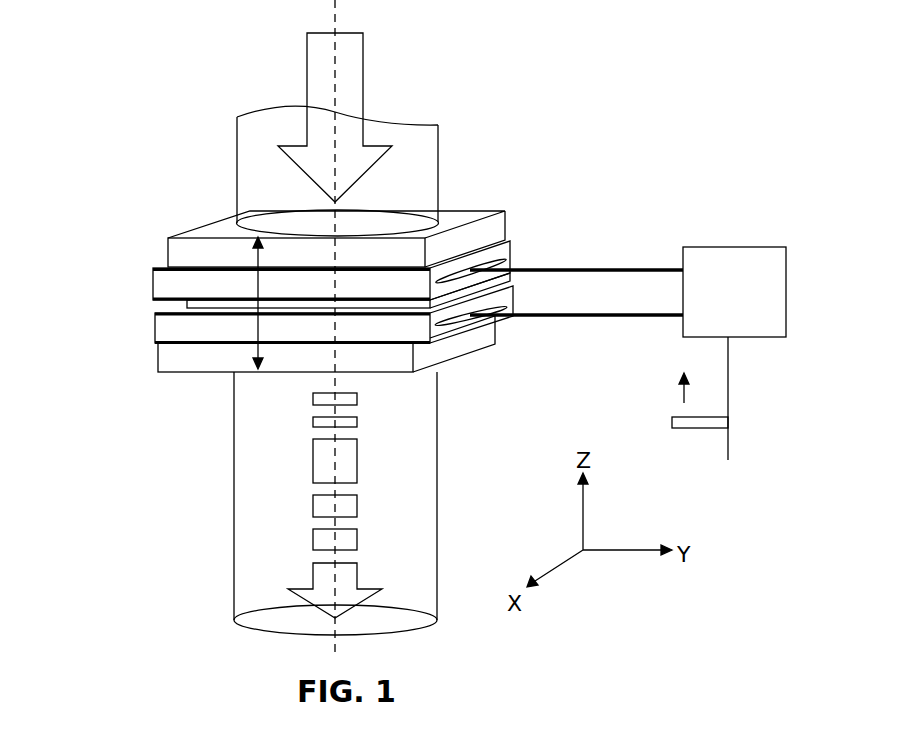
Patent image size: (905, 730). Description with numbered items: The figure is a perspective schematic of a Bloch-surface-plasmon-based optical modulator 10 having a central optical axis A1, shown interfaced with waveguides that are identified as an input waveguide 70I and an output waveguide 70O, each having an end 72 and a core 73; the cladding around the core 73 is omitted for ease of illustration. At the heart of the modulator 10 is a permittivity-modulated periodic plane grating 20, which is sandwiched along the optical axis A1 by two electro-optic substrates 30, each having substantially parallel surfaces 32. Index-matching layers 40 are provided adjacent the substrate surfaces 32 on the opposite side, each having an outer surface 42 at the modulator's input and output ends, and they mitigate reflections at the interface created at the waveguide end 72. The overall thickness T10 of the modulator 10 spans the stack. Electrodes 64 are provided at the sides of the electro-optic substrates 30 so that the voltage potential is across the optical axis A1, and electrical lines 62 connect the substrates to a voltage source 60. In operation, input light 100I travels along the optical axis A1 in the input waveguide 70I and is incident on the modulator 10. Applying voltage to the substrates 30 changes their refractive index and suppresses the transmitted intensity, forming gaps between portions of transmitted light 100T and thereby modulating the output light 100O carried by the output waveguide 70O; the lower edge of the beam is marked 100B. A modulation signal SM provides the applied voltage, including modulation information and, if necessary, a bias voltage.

The Bloch-surface-plasmon-based optical modulator 10 is at (359, 240).
The permittivity-modulated periodic plane grating 20 is at (187, 306).
The electro-optic substrate 30 is at (153, 279).
The substrate surface 32 is at (166, 266).
The index-matching layer 40 is at (492, 228).
The index-matching layer surface 42 is at (467, 217).
The voltage source 60 is at (734, 292).
The electrical line 62 is at (533, 315).
The electrode 64 is at (495, 250).
The input waveguide 70I is at (349, 370).
The output waveguide 70O is at (460, 470).
The waveguide end 72 is at (257, 220).
The core region 73 is at (427, 143).
The input light 100I is at (363, 77).
The output light 100O is at (278, 490).
The light beam bottom surface 100B is at (348, 555).
The transmitted light portion 100T is at (320, 573).
The central optical axis A1 is at (337, 15).
The overall thickness T10 is at (258, 287).
The modulation signal SM is at (677, 428).